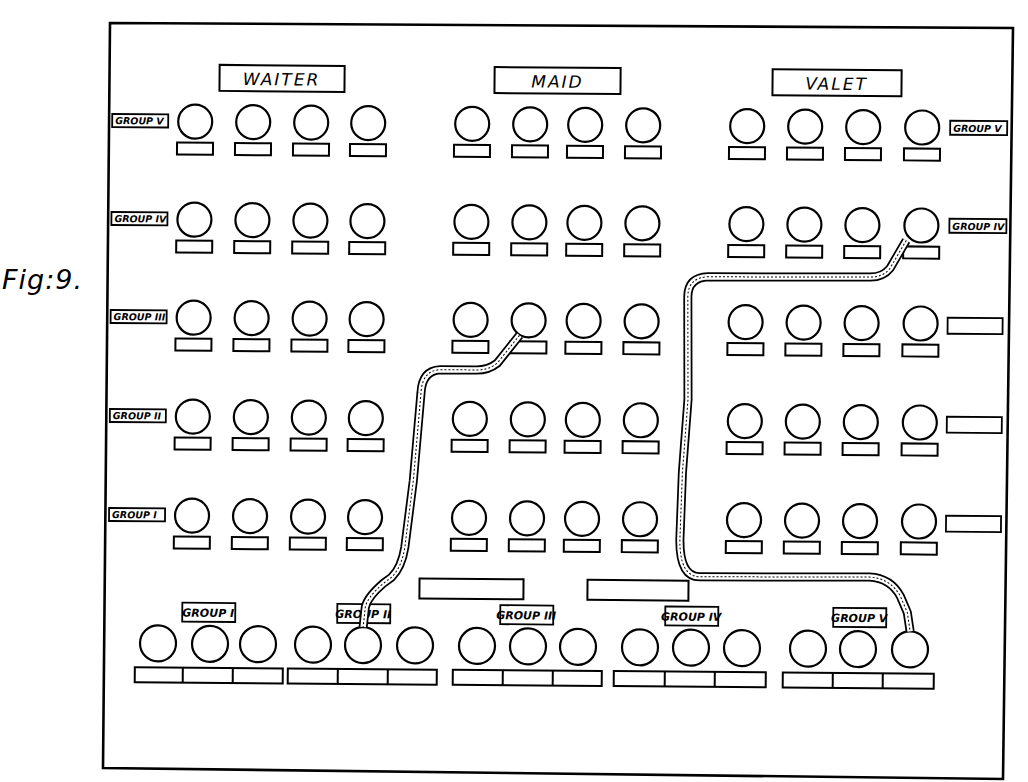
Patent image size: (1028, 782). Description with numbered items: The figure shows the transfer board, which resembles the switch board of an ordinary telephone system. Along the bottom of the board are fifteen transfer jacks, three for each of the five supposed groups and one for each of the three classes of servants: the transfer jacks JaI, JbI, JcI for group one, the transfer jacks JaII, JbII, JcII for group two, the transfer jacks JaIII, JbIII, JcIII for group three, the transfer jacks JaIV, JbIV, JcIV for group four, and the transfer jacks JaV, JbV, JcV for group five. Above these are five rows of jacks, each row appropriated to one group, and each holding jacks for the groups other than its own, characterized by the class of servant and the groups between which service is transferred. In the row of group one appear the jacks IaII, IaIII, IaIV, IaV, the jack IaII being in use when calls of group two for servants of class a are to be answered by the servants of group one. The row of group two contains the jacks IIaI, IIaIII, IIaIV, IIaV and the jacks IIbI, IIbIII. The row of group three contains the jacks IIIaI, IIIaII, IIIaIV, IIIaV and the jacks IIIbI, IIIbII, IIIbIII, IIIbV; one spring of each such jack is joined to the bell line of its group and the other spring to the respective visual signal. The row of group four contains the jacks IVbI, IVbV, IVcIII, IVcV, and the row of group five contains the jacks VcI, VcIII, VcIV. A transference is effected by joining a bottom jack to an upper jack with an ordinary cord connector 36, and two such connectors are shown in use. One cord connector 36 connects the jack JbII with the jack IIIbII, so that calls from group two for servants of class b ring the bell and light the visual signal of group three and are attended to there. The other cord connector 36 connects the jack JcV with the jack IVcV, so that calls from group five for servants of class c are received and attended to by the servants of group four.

The cord connector 36 is at (422, 477).
The transfer board jack VcI is at (747, 134).
The transfer board jack VcIII is at (863, 135).
The transfer board jack VcIV is at (922, 135).
The transfer board jack IVbI is at (471, 230).
The transfer board jack IVbV is at (642, 231).
The transfer board jack IVcIII is at (862, 233).
The transfer board jack IVcV is at (921, 233).
The transfer board jack IIIaI is at (193, 326).
The transfer board jack IIIaII is at (251, 326).
The transfer board jack IIIaIV is at (309, 326).
The transfer board jack IIIaV is at (366, 327).
The transfer board jack IIIbI is at (470, 328).
The transfer board jack IIIbII is at (528, 328).
The transfer board jack IIIbIII is at (583, 329).
The transfer board jack IIIbV is at (641, 329).
The transfer board jack IIaI is at (193, 425).
The transfer board jack IIaIII is at (251, 425).
The transfer board jack IIaIV is at (309, 425).
The transfer board jack IIaV is at (366, 426).
The transfer board jack IIbI is at (470, 427).
The transfer board jack IIbIII is at (528, 427).
The transfer board jack IaII is at (192, 524).
The transfer board jack IaIII is at (250, 524).
The transfer board jack IaIV is at (308, 524).
The transfer board jack IaV is at (365, 525).
The transfer jack JaI is at (158, 643).
The transfer jack JbI is at (210, 644).
The transfer jack JcI is at (258, 644).
The transfer jack JaII is at (313, 645).
The transfer jack JbII is at (363, 645).
The transfer jack JcII is at (415, 645).
The transfer jack JaIII is at (477, 646).
The transfer jack JbIII is at (528, 646).
The transfer jack JcIII is at (578, 647).
The transfer jack JaIV is at (640, 647).
The transfer jack JbIV is at (691, 648).
The transfer jack JcIV is at (742, 648).
The transfer jack JaV is at (808, 648).
The transfer jack JbV is at (858, 649).
The transfer jack JcV is at (910, 649).